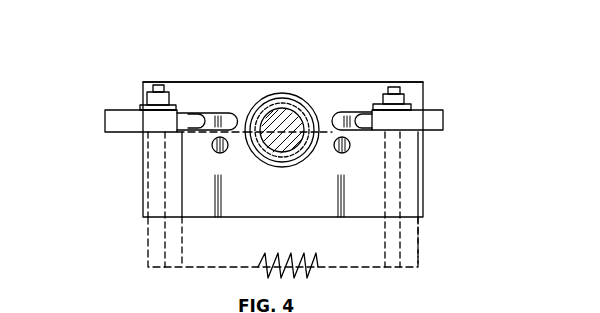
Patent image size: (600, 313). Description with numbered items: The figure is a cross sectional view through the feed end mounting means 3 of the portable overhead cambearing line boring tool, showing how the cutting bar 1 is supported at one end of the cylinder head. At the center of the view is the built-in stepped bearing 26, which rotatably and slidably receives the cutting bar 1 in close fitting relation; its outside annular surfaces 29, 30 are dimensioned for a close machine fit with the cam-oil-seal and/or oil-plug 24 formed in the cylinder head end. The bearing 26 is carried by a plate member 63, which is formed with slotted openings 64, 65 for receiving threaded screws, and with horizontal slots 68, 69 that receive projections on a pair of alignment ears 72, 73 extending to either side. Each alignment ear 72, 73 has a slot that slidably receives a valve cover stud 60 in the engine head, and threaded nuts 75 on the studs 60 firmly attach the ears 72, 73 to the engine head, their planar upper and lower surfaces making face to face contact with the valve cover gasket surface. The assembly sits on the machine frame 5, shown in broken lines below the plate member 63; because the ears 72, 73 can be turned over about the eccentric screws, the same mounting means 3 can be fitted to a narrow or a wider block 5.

The cutting bar 1 is at (306, 108).
The feed end mounting means 3 is at (423, 82).
The machine frame 5 is at (418, 250).
The cam-oil-seal and/or oil-plug 24 is at (322, 110).
The built-in stepped bearing 26 is at (298, 87).
The outside annular surface 29 is at (283, 100).
The outside annular surface 30 is at (262, 100).
The valve cover stud 60 is at (157, 86).
The plate member 63 is at (423, 190).
The slotted opening 64 is at (199, 114).
The slotted opening 65 is at (363, 130).
The horizontal slot 68 is at (230, 110).
The horizontal slot 69 is at (340, 114).
The alignment ear 72 is at (105, 118).
The alignment ear 73 is at (443, 118).
The threaded nut 75 is at (166, 106).